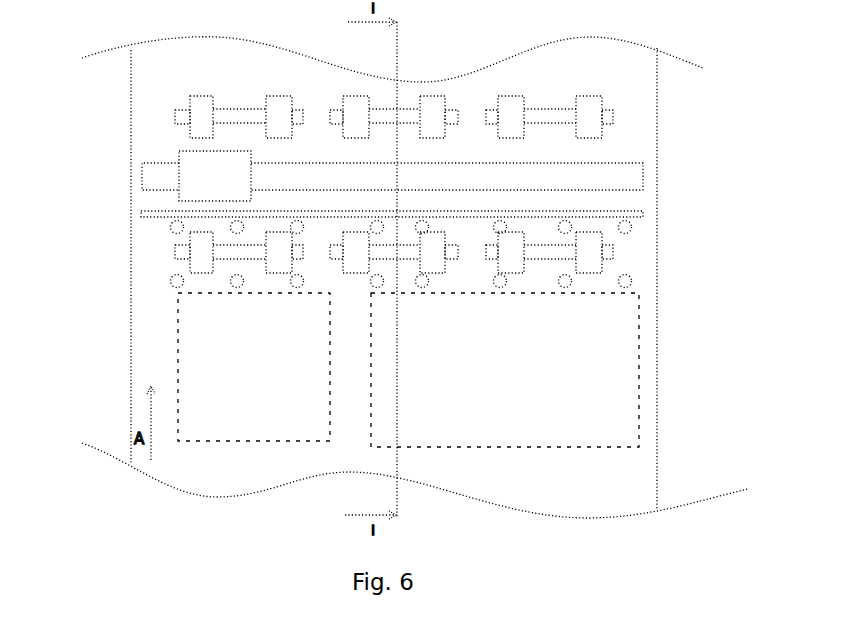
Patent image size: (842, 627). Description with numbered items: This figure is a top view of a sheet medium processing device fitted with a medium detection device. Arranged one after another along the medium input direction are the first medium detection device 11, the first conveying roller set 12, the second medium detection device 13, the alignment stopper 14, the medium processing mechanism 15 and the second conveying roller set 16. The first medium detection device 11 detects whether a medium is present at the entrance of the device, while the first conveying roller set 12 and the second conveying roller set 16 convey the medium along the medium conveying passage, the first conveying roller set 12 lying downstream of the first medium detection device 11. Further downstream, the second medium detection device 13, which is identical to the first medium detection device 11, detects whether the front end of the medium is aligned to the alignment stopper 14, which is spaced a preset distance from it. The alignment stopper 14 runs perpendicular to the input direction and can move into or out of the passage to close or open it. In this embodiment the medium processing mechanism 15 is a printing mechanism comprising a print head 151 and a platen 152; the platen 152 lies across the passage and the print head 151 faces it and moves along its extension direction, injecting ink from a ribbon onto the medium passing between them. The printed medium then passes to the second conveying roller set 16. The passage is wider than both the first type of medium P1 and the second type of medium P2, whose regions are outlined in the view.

The first medium detection device 11 is at (172, 284).
The first conveying roller set 12 is at (178, 254).
The second medium detection device 13 is at (171, 229).
The alignment stopper 14 is at (142, 212).
The medium processing mechanism 15 is at (330, 160).
The print head 151 is at (186, 158).
The platen 152 is at (150, 177).
The second conveying roller set 16 is at (188, 104).
The first type of medium P1 is at (617, 335).
The second type of medium P2 is at (198, 335).